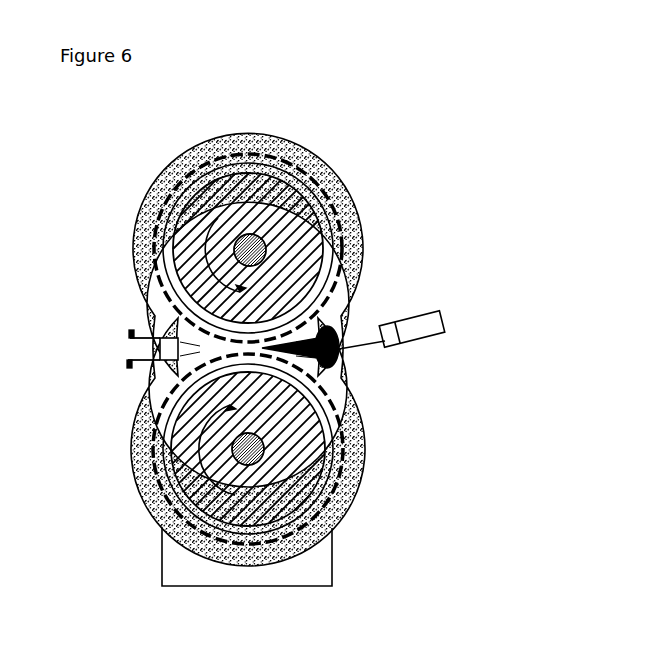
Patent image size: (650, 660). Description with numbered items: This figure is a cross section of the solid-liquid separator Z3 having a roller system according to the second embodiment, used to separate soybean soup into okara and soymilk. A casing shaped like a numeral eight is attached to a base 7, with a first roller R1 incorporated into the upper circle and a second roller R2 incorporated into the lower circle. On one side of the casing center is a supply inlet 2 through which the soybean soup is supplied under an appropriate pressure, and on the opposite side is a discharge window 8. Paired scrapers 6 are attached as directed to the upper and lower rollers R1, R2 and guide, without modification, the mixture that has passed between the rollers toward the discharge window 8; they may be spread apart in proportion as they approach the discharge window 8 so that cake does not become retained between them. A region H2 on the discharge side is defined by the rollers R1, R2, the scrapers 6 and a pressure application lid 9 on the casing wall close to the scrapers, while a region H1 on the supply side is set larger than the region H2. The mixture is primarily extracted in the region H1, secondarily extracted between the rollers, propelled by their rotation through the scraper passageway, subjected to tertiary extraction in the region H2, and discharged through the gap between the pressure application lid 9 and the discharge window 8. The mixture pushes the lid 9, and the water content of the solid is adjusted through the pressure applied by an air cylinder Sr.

The first roller R1 is at (269, 152).
The second roller R2 is at (155, 513).
The solid-liquid separator Z3 is at (447, 88).
The supply inlet 2 is at (130, 335).
The scrapers 6 is at (345, 300).
The base 7 is at (331, 566).
The discharge window 8 is at (338, 356).
The pressure application lid 9 is at (340, 354).
The region on the supply side H1 is at (190, 348).
The region on the discharge side H2 is at (340, 306).
The air cylinder Sr is at (432, 320).